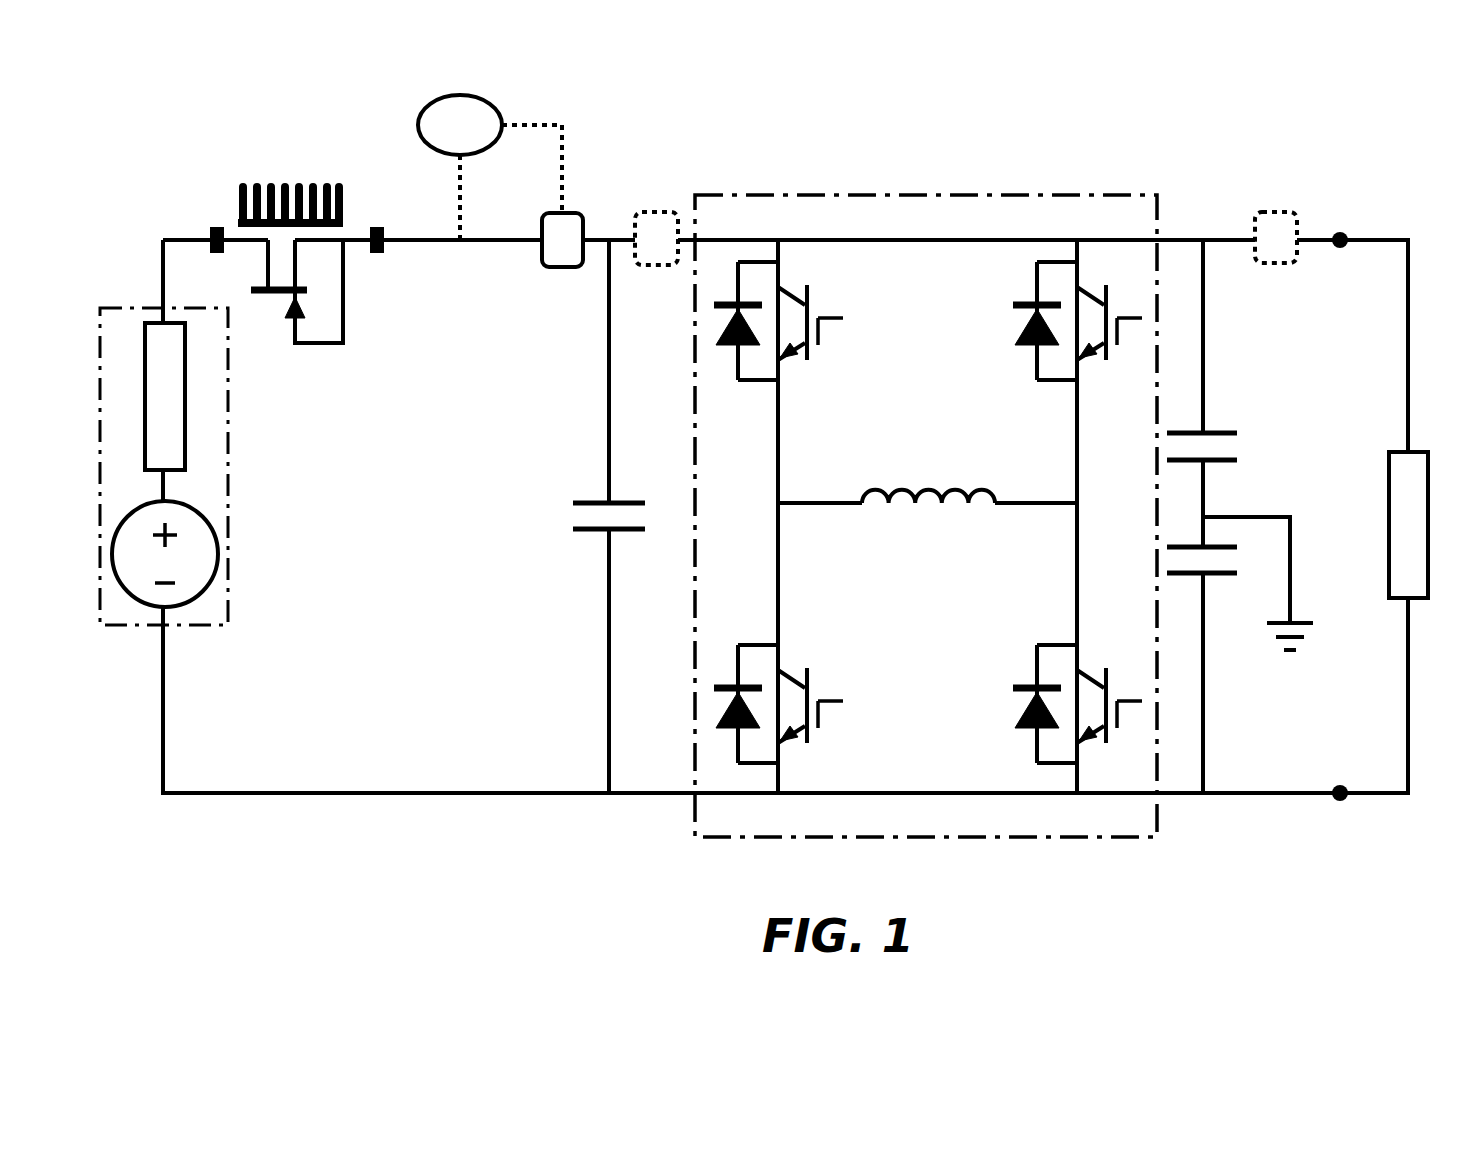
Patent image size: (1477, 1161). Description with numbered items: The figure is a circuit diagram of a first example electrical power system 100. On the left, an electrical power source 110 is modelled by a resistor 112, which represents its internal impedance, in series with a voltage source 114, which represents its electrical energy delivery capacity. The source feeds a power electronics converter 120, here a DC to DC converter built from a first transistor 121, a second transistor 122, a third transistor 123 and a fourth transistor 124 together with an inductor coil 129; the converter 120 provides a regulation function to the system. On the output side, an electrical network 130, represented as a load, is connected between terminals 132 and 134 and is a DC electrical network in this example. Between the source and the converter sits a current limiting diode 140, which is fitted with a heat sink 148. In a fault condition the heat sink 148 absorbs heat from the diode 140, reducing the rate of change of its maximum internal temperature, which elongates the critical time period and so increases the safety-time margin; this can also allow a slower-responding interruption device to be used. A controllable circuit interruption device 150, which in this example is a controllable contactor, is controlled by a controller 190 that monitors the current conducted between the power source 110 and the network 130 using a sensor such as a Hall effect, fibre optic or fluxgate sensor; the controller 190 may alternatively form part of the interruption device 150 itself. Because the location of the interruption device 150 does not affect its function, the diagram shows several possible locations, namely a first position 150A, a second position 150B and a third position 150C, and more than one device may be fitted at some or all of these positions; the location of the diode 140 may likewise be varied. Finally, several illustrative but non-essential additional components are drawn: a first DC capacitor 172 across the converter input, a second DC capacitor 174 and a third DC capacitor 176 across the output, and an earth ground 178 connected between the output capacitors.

The electrical power system 100 is at (163, 106).
The electrical power source 110 is at (185, 627).
The resistor 112 is at (187, 430).
The voltage source 114 is at (218, 530).
The power electronics converter 120 is at (910, 195).
The first transistor 121 is at (823, 320).
The second transistor 122 is at (830, 700).
The third transistor 123 is at (1022, 345).
The fourth transistor 124 is at (1018, 715).
The inductor coil 129 is at (905, 482).
The electrical network 130 is at (1430, 565).
The terminal 132 is at (1333, 247).
The terminal 134 is at (1338, 800).
The current limiting diode 140 is at (320, 345).
The heat sink 148 is at (298, 185).
The controllable circuit interruption device 150 is at (650, 212).
The first position 150A is at (522, 258).
The second position 150B is at (655, 282).
The third position 150C is at (1232, 213).
The first DC capacitor 172 is at (585, 500).
The second DC capacitor 174 is at (1218, 433).
The third DC capacitor 176 is at (1222, 575).
The earth ground 178 is at (1293, 622).
The controller 190 is at (418, 115).